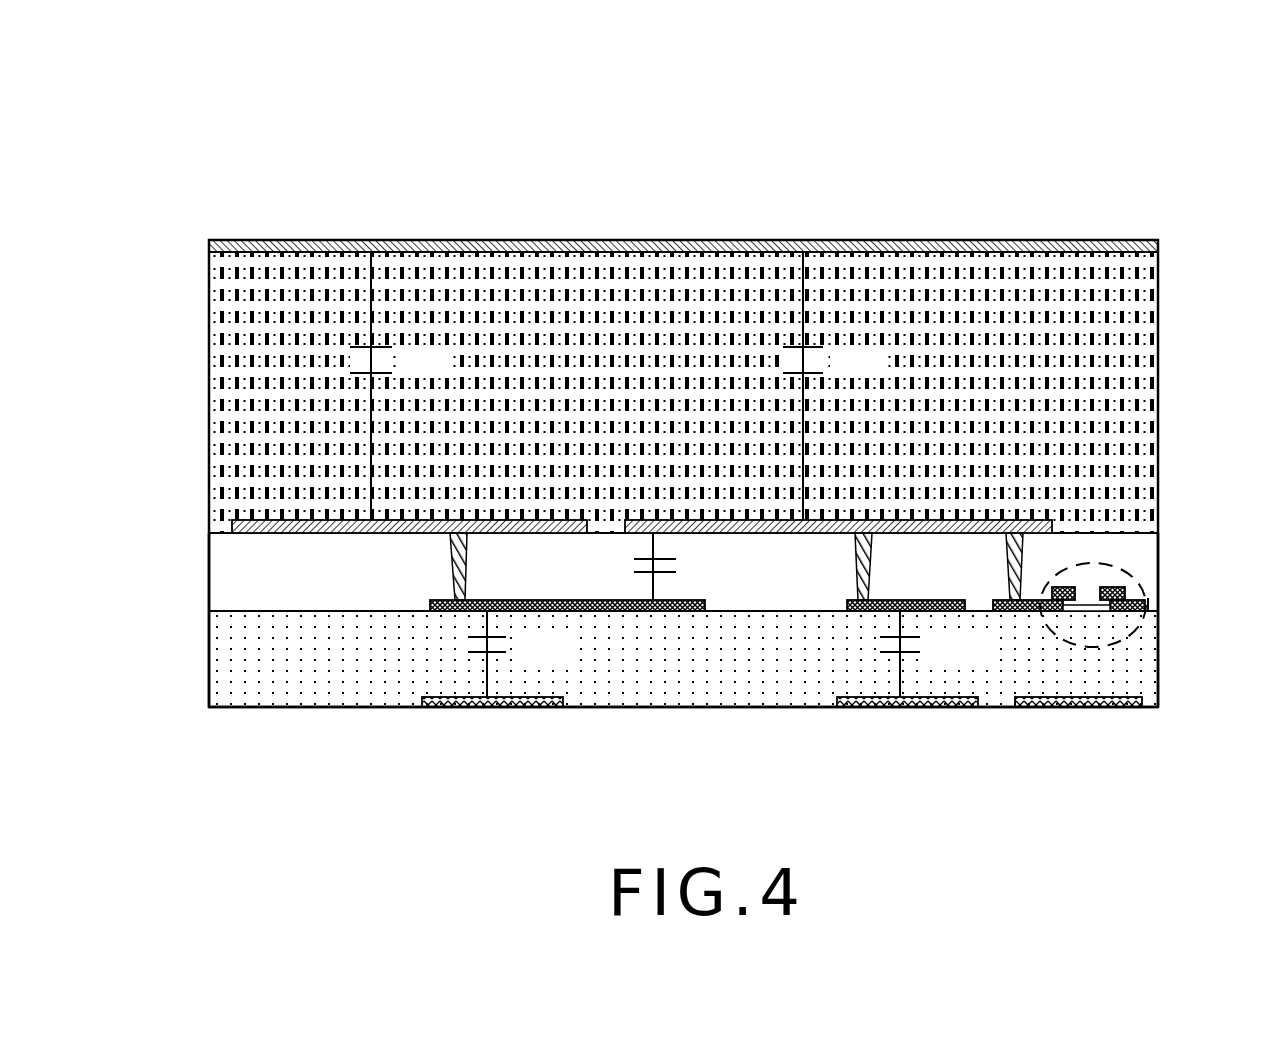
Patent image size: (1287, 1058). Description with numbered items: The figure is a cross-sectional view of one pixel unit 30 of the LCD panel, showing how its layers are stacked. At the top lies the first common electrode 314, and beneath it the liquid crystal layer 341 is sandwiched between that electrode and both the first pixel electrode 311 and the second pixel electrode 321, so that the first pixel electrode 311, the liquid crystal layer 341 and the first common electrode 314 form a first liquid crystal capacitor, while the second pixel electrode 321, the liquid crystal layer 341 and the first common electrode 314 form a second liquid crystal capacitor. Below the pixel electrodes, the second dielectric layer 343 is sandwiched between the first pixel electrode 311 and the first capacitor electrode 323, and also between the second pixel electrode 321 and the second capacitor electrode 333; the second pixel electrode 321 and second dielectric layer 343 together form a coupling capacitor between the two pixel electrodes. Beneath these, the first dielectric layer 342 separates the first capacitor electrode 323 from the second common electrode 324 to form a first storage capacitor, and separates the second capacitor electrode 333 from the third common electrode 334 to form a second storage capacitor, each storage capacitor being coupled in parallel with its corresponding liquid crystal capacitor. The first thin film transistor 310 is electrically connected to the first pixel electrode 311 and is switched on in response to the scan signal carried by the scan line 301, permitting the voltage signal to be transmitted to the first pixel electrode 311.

The pixel unit 30 is at (1128, 160).
The first common electrode 314 is at (209, 244).
The liquid crystal layer 341 is at (1140, 331).
The second dielectric layer 343 is at (1145, 550).
The first thin film transistor 310 is at (1140, 580).
The first dielectric layer 342 is at (1147, 663).
The first pixel electrode 311 is at (325, 533).
The second pixel electrode 321 is at (777, 533).
The first capacitor electrode 323 is at (655, 611).
The second common electrode 324 is at (525, 707).
The second capacitor electrode 333 is at (867, 611).
The third common electrode 334 is at (950, 707).
The scan line 301 is at (1120, 707).